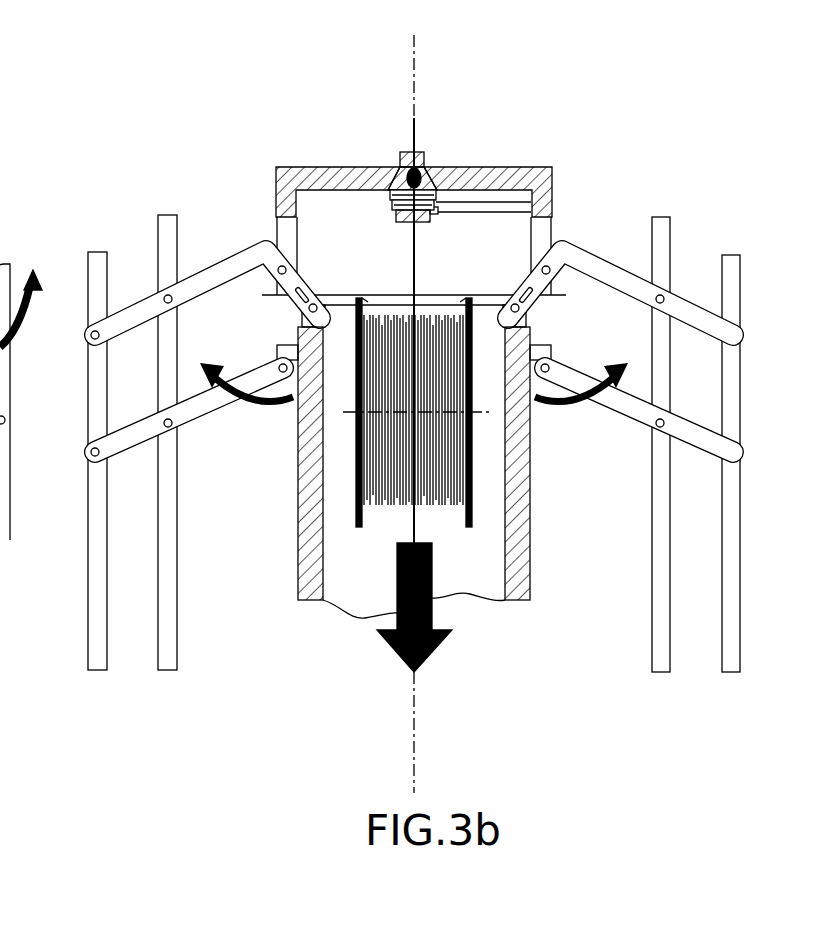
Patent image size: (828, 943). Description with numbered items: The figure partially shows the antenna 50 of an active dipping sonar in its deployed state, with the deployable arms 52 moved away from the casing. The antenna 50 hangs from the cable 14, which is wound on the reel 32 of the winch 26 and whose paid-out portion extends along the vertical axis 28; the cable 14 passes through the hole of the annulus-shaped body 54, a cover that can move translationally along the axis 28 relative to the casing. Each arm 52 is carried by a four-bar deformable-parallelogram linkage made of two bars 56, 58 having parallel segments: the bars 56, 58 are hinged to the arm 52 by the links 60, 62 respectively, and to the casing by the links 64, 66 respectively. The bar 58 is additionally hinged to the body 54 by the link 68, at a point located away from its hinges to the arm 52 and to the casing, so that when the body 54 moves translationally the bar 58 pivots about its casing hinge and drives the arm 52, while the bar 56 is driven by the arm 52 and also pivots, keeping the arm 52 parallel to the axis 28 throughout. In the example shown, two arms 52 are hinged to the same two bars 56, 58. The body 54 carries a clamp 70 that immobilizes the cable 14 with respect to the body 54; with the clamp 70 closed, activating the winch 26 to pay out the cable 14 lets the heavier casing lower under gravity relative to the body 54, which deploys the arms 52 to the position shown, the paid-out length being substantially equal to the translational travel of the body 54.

The cable 14 is at (414, 118).
The winch 26 is at (382, 514).
The vertical axis 28 is at (415, 770).
The reel 32 is at (472, 490).
The antenna 50 is at (729, 221).
The deployable arms 52 is at (167, 660).
The body 54 is at (312, 167).
The bar 56 is at (195, 412).
The bar 58 is at (210, 280).
The link 60 is at (90, 455).
The link 62 is at (90, 338).
The link 64 is at (282, 362).
The link 66 is at (318, 308).
The link 68 is at (288, 268).
The clamp 70 is at (428, 158).